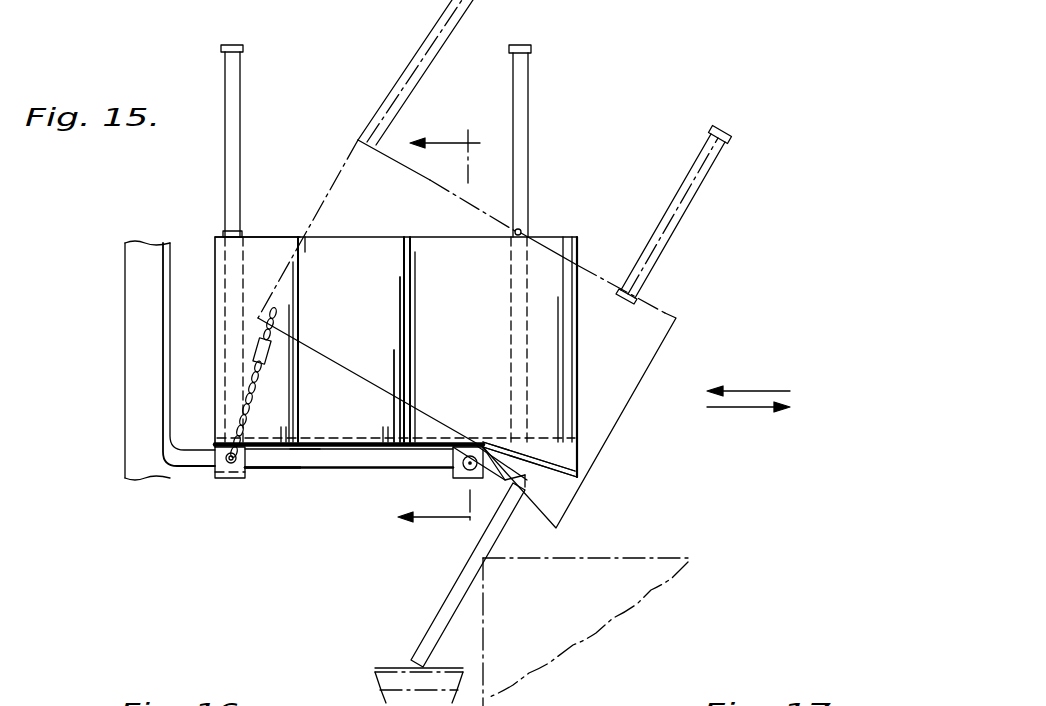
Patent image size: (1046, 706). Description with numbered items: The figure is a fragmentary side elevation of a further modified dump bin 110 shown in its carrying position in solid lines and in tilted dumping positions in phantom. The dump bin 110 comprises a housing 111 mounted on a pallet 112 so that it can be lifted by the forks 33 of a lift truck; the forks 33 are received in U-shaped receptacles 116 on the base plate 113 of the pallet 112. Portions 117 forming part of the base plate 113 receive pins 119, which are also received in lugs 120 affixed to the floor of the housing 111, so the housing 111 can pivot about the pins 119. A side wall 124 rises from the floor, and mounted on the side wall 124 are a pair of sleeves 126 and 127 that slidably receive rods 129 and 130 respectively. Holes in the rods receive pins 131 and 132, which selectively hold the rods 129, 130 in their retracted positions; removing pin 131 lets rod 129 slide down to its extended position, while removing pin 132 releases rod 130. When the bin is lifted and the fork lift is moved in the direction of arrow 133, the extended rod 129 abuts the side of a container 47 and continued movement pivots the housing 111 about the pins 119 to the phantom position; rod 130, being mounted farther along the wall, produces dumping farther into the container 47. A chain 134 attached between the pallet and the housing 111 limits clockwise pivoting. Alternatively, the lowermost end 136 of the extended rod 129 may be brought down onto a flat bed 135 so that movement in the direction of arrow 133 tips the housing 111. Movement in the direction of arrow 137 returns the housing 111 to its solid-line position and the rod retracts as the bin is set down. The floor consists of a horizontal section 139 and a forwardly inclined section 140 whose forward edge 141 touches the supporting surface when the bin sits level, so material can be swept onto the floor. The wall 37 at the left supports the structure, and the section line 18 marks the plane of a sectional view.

The section line 18- 18 is at (427, 319).
The forks 33 is at (300, 470).
The support wall 37 is at (125, 270).
The container 47 is at (660, 560).
The dump bin 110 is at (562, 210).
The housing 111 is at (566, 237).
The pallet 112 is at (332, 469).
The base plate 113 is at (288, 469).
The U-shaped receptacles 116 is at (218, 478).
The portions 117 is at (476, 474).
The pins 119 is at (470, 456).
The lugs 120 is at (453, 479).
The side wall 124 is at (368, 312).
The sleeve 126 is at (510, 283).
The sleeve 127 is at (262, 236).
The rod 129 is at (528, 86).
The rod 130 is at (241, 105).
The pin 131 is at (515, 232).
The pin 132 is at (228, 236).
The arrow 133 is at (745, 409).
The chain 134 is at (247, 386).
The flat bed 135 is at (380, 667).
The lowermost end 136 is at (398, 657).
The arrow 137 is at (752, 390).
The horizontal section 139 is at (368, 437).
The forwardly inclined section 140 is at (573, 455).
The forward edge 141 is at (577, 475).